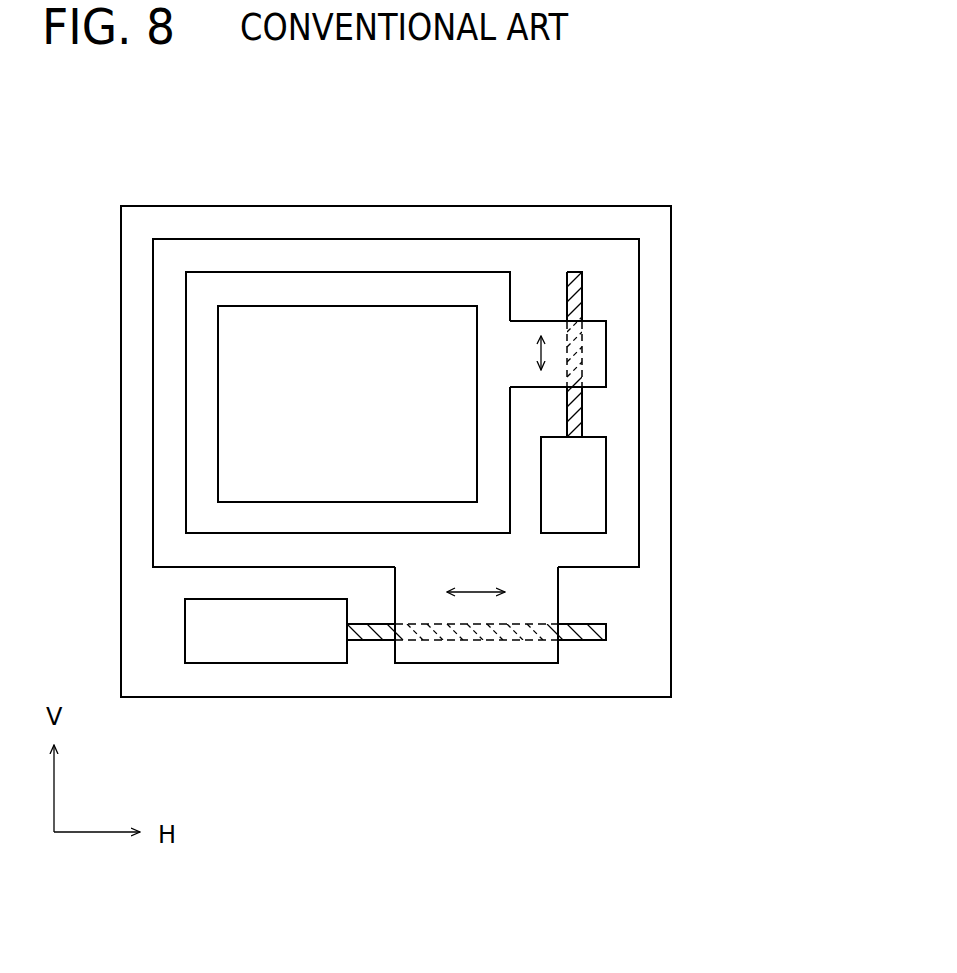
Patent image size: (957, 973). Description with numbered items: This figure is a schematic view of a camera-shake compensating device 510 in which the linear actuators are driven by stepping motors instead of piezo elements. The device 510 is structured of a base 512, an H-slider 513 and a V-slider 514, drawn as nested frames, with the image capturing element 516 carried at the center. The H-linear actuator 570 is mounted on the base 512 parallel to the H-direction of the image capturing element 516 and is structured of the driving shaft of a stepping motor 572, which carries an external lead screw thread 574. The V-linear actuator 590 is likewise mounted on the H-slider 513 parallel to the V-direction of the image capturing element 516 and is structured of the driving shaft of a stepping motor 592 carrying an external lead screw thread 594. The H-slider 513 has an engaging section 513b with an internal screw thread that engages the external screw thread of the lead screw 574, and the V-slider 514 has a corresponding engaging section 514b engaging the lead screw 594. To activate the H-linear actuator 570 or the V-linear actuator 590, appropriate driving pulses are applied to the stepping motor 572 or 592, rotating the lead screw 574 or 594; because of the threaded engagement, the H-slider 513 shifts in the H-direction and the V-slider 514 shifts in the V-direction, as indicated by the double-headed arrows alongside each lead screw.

The camera-shake compensating device 510 is at (689, 181).
The base 512 is at (671, 387).
The H-slider 513 is at (639, 567).
The engaging section 513b is at (485, 663).
The V-slider 514 is at (510, 274).
The engaging section 514b is at (606, 352).
The image capturing element 516 is at (353, 337).
The H-linear actuator 570 is at (395, 711).
The stepping motor 572 is at (295, 645).
The external lead screw thread 574 is at (366, 635).
The V-linear actuator 590 is at (685, 402).
The stepping motor 592 is at (606, 485).
The external lead screw thread 594 is at (582, 425).